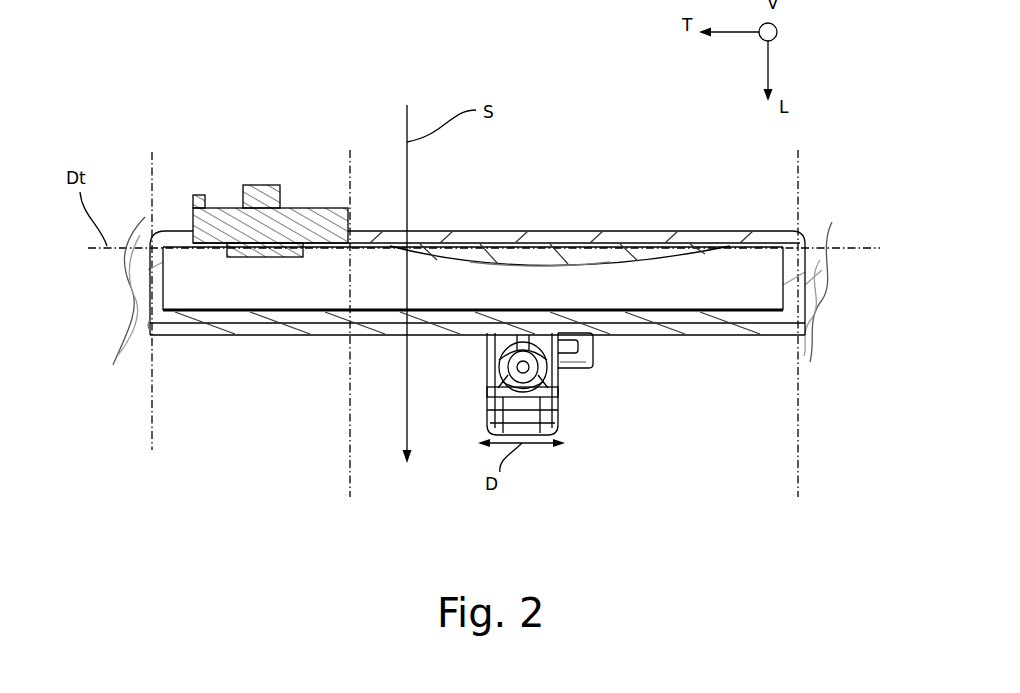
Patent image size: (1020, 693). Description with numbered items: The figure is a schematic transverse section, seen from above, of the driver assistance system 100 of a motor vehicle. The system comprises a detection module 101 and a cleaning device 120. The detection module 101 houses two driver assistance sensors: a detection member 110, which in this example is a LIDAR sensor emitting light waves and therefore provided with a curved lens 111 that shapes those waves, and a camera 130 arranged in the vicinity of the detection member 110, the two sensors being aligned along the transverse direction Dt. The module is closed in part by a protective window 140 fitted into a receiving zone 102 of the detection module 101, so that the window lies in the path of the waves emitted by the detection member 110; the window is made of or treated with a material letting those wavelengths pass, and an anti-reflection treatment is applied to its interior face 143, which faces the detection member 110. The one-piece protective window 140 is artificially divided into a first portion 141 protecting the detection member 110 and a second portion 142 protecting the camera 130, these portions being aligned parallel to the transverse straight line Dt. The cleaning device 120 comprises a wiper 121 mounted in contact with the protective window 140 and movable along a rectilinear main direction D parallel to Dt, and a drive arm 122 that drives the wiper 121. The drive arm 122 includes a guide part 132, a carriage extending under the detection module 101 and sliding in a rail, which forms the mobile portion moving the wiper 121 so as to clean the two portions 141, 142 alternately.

The driver assistance system 100 is at (178, 168).
The detection module 101 is at (478, 230).
The receiving zone 102 is at (778, 336).
The detection member 110 is at (600, 240).
The curved lens 111 is at (522, 263).
The cleaning device 120 is at (592, 403).
The wiper 121 is at (522, 353).
The drive arm 122 is at (608, 358).
The camera 130 is at (290, 205).
The guide part 132 is at (598, 343).
The protective window 140 is at (150, 325).
The first portion 141 is at (797, 497).
The second portion 142 is at (350, 357).
The interior face 143 is at (675, 320).